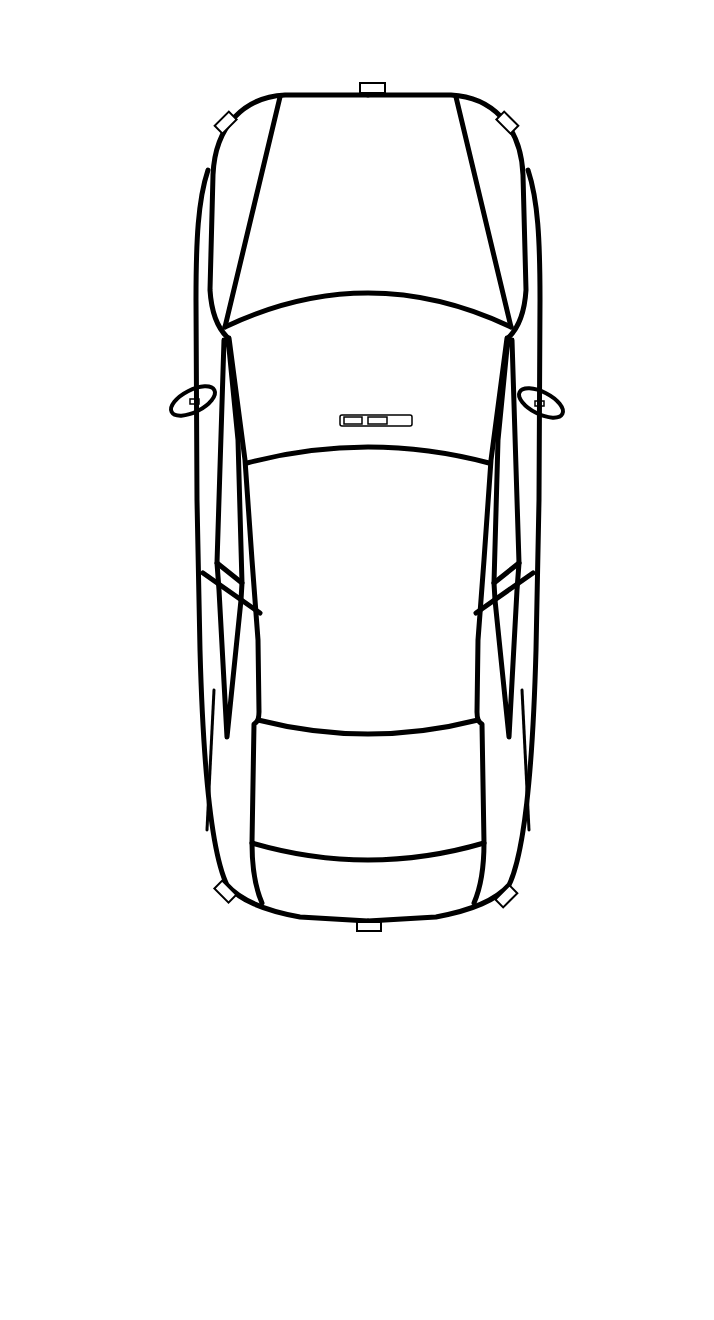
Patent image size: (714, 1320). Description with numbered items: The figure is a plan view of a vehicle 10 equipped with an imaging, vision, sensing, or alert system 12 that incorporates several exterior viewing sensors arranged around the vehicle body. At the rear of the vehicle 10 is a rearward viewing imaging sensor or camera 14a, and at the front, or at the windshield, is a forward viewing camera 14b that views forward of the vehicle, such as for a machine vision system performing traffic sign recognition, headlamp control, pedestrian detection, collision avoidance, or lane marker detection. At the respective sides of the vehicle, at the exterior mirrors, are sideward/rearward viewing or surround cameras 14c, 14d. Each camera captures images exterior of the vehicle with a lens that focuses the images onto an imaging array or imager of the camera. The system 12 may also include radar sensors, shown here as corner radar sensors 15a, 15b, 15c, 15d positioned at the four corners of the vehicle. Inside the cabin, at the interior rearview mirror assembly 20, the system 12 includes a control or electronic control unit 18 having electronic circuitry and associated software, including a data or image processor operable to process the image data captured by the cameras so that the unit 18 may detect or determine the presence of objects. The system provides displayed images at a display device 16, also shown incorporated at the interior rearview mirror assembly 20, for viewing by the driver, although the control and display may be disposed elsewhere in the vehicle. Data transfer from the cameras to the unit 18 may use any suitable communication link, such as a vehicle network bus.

The vehicle 10 is at (134, 104).
The alert system 12 is at (322, 944).
The rearward viewing camera 14a is at (373, 931).
The forward viewing camera 14b is at (380, 84).
The sideward/rearward viewing camera 14c is at (180, 393).
The sideward/rearward viewing camera 14d is at (556, 395).
The corner radar sensor 15a is at (222, 116).
The corner radar sensor 15b is at (513, 116).
The corner radar sensor 15c is at (218, 895).
The corner radar sensor 15d is at (513, 900).
The display device 16 is at (352, 417).
The electronic control unit 18 is at (374, 417).
The interior rearview mirror assembly 20 is at (410, 418).